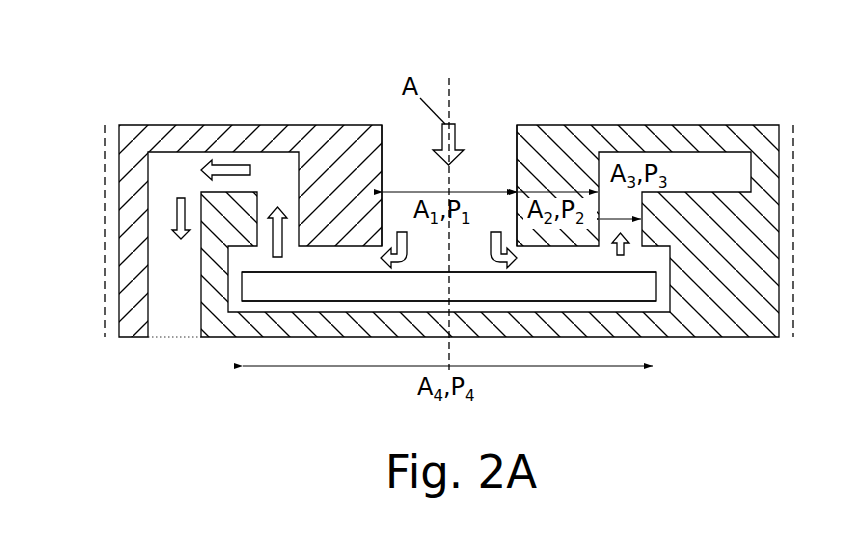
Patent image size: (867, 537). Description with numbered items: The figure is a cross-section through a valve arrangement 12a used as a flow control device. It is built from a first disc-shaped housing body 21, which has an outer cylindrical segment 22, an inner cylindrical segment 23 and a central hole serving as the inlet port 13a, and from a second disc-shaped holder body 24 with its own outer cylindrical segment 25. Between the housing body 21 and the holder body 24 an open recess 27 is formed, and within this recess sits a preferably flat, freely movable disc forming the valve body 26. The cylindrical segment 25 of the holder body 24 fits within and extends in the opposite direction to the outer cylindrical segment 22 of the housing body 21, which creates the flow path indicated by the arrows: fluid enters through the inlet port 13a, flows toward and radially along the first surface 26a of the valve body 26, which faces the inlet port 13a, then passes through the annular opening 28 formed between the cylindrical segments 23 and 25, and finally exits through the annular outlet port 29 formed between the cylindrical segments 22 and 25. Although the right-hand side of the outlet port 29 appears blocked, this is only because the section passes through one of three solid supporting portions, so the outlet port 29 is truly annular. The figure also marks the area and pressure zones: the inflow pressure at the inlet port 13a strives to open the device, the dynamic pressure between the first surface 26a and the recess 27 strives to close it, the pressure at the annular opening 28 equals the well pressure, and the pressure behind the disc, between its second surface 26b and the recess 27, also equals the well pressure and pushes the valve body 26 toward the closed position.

The valve arrangement 12a is at (718, 88).
The inlet port 13a is at (492, 180).
The first disc-shaped housing body 21 is at (212, 209).
The outer cylindrical segment 22 is at (132, 252).
The inner cylindrical segment 23 is at (358, 183).
The second disc-shaped holder body 24 is at (643, 322).
The outer cylindrical segment 25 is at (220, 287).
The valve body 26 is at (549, 306).
The first surface 26a is at (600, 273).
The second surface 26b is at (572, 300).
The recess 27 is at (662, 283).
The annular opening 28 is at (282, 193).
The outlet port 29 is at (176, 250).